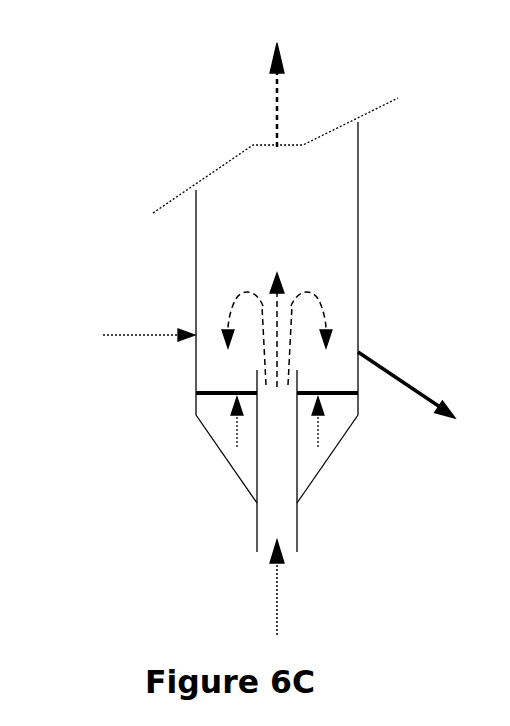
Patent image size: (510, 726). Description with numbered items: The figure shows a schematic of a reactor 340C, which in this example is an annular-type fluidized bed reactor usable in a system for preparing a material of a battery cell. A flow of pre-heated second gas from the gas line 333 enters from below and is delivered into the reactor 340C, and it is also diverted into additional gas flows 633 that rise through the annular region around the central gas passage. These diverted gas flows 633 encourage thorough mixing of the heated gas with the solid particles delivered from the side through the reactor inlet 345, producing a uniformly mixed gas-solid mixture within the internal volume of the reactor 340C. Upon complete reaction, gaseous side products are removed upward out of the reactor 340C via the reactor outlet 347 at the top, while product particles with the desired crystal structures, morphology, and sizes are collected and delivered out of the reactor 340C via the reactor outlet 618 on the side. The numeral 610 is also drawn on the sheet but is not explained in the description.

The reactor 340C is at (77, 177).
The reactor outlet 347 is at (277, 110).
The reactor inlet 345 is at (157, 337).
The reactor outlet 618 is at (396, 374).
The gas flows 633 is at (318, 430).
The lower reactor section 610 is at (343, 461).
The gas line 333 is at (280, 592).